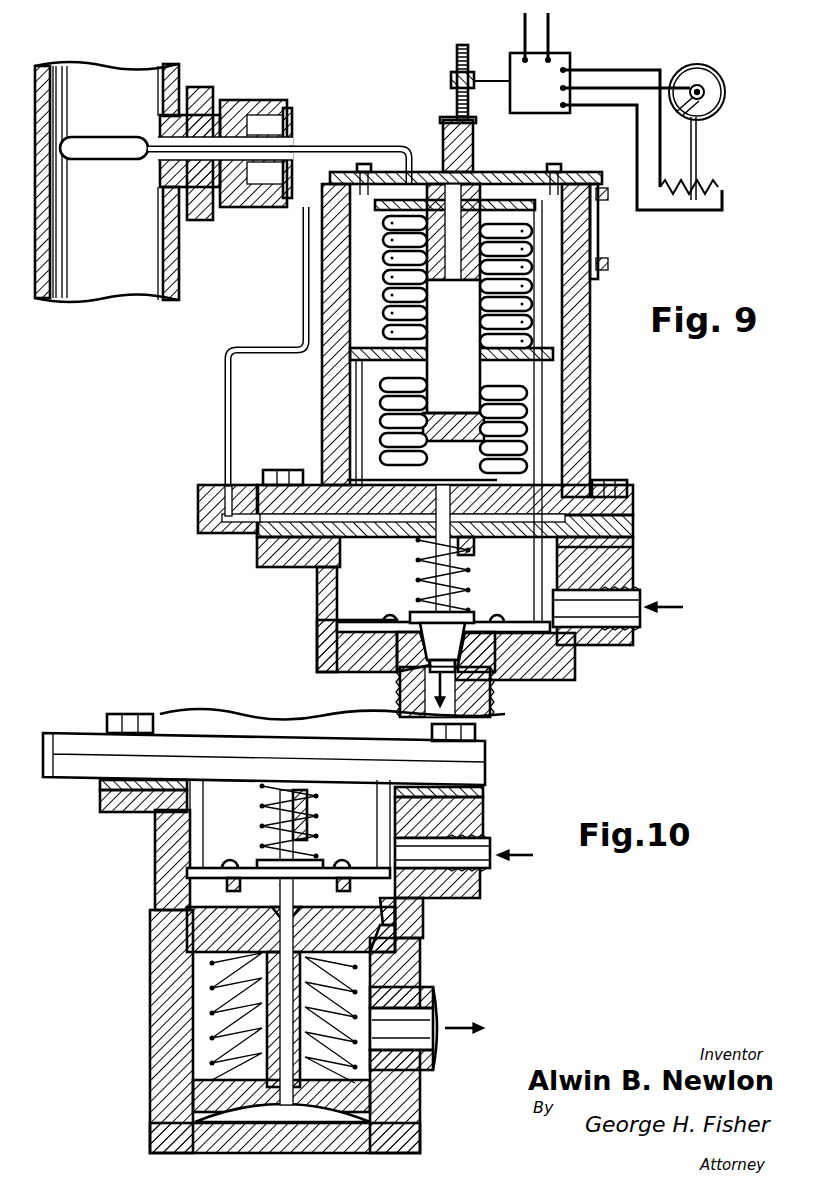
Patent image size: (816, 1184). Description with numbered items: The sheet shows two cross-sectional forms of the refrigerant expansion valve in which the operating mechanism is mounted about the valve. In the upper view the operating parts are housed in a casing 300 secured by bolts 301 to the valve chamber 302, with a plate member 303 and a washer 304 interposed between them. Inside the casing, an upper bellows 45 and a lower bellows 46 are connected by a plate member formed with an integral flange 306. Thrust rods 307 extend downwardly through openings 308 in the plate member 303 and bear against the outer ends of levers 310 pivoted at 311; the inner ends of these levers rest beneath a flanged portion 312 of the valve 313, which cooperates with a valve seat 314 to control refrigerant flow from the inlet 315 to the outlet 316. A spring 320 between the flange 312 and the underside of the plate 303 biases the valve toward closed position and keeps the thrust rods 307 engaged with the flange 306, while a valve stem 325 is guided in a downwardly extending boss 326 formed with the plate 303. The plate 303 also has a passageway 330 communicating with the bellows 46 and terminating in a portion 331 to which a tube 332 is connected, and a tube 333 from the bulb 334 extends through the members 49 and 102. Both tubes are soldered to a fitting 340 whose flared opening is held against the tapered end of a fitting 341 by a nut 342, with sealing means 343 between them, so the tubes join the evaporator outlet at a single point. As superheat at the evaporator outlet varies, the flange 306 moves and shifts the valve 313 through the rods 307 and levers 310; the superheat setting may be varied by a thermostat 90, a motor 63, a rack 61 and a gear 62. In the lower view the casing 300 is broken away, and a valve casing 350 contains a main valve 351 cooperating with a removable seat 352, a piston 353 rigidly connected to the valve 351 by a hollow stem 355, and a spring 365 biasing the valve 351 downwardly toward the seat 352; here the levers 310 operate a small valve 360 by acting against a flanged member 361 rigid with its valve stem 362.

In FIG. 9, the bulb 334 is at (99, 158).
In FIG. 9, the fitting 340 is at (292, 122).
In FIG. 9, the fitting 341 is at (206, 221).
In FIG. 9, the nut 342 is at (280, 208).
In FIG. 9, the sealing means 343 is at (238, 208).
In FIG. 9, the tube 333 is at (378, 150).
In FIG. 9, the tube 332 is at (225, 432).
In FIG. 9, the portion 331 is at (198, 512).
In FIG. 9, the passageway 330 is at (226, 526).
In FIG. 9, the gear 62 is at (451, 80).
In FIG. 9, the rack 61 is at (457, 103).
In FIG. 9, the motor 63 is at (519, 108).
In FIG. 9, the member 102 is at (474, 165).
In FIG. 9, the member 49 is at (524, 178).
In FIG. 9, the thermostat 90 is at (718, 74).
In FIG. 9, the bellows 45 is at (548, 270).
In FIG. 9, the flange 306 is at (540, 348).
In FIG. 9, the bellows 46 is at (556, 418).
In FIG. 9, the casing 300 is at (570, 408).
In FIG. 10, the casing 300 is at (204, 715).
In FIG. 9, the thrust rods 307 is at (353, 410).
In FIG. 10, the thrust rods 307 is at (204, 820).
In FIG. 9, the bolts 301 is at (610, 480).
In FIG. 9, the openings 308 is at (583, 522).
In FIG. 9, the plate member 303 is at (628, 530).
In FIG. 9, the washer 304 is at (633, 546).
In FIG. 9, the valve chamber 302 is at (630, 570).
In FIG. 9, the inlet 315 is at (640, 615).
In FIG. 10, the inlet 315 is at (482, 860).
In FIG. 9, the boss 326 is at (418, 556).
In FIG. 10, the boss 326 is at (313, 812).
In FIG. 9, the valve stem 325 is at (436, 590).
In FIG. 9, the spring 320 is at (472, 572).
In FIG. 10, the spring 320 is at (307, 833).
In FIG. 9, the flanged portion 312 is at (474, 615).
In FIG. 9, the levers 310 is at (345, 632).
In FIG. 10, the levers 310 is at (226, 866).
In FIG. 9, the valve 313 is at (420, 652).
In FIG. 9, the valve seat 314 is at (427, 662).
In FIG. 9, the pivot 311 is at (490, 678).
In FIG. 9, the outlet 316 is at (481, 716).
In FIG. 10, the valve stem 362 is at (240, 884).
In FIG. 10, the flanged member 361 is at (300, 866).
In FIG. 10, the small valve 360 is at (258, 904).
In FIG. 10, the main valve 351 is at (383, 912).
In FIG. 10, the removable seat 352 is at (382, 938).
In FIG. 10, the spring 365 is at (210, 988).
In FIG. 10, the hollow stem 355 is at (304, 1000).
In FIG. 10, the valve casing 350 is at (150, 1045).
In FIG. 10, the piston 353 is at (355, 1102).